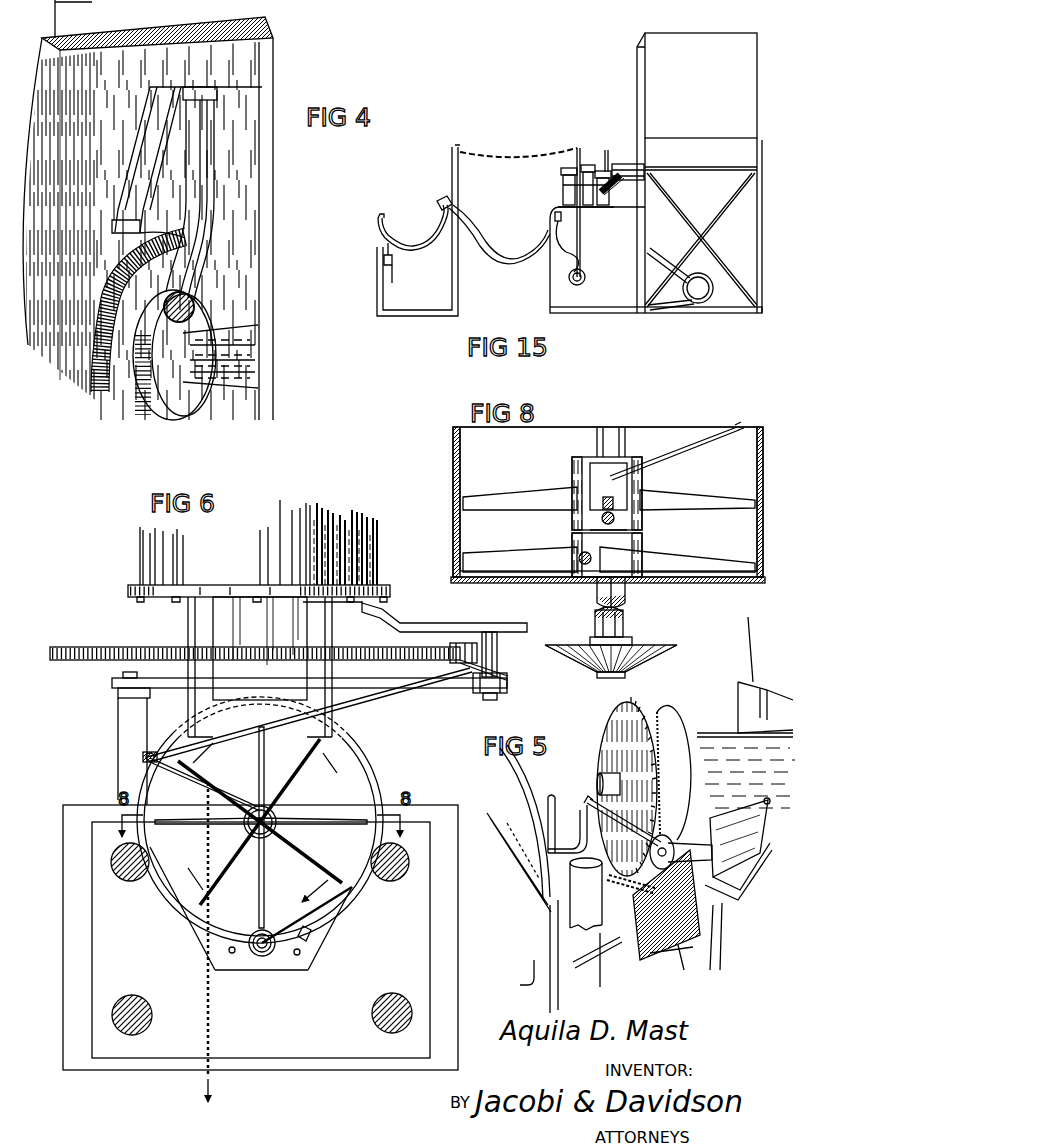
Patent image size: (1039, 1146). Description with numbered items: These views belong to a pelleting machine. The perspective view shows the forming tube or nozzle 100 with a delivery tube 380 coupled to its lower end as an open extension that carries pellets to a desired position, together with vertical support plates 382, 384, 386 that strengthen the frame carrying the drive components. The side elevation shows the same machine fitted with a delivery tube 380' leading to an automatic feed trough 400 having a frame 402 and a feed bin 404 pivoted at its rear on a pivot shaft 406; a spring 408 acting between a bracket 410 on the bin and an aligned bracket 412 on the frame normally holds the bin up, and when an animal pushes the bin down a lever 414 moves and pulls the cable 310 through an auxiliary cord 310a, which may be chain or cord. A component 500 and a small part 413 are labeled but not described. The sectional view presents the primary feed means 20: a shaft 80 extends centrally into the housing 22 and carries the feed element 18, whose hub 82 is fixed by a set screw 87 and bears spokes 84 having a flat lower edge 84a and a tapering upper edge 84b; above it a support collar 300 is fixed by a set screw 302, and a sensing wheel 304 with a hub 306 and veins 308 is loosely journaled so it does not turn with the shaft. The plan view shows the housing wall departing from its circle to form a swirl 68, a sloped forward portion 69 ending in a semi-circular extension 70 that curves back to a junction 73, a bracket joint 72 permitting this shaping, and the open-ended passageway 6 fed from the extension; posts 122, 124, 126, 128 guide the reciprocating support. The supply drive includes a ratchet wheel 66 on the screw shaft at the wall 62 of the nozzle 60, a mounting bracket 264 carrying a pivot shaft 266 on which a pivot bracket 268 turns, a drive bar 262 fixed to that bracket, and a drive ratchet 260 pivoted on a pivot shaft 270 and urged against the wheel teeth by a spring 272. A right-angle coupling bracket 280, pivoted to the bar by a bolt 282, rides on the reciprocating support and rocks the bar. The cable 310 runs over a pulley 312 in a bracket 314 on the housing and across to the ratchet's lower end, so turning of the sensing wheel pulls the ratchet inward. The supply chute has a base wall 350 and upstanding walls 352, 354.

In FIG. 4, the forming tube or nozzle 100 is at (213, 95).
In FIG. 4, the delivery tube 380 is at (233, 200).
In FIG. 4, the vertical support plate 382 is at (133, 172).
In FIG. 4, the vertical support plate 384 is at (160, 133).
In FIG. 4, the vertical support plate 386 is at (185, 87).
In FIG. 15, the tank 500 is at (628, 80).
In FIG. 15, the auxiliary cord 310a is at (576, 148).
In FIG. 6, the auxiliary cord 310a is at (210, 1060).
In FIG. 15, the lever 414 is at (478, 152).
In FIG. 15, the pivot shaft 406 is at (445, 203).
In FIG. 15, the feed bin 404 is at (424, 234).
In FIG. 15, the bracket 410 is at (380, 220).
In FIG. 15, the spring 408 is at (393, 246).
In FIG. 15, the bracket 412 is at (377, 265).
In FIG. 15, the rod 413 is at (392, 278).
In FIG. 15, the automatic feed trough 400 is at (380, 316).
In FIG. 15, the frame 402 is at (430, 318).
In FIG. 15, the outlet or delivery tube 380' is at (499, 256).
In FIG. 8, the semi-circular extension 70 is at (618, 427).
In FIG. 6, the semi-circular extension 70 is at (248, 948).
In FIG. 8, the sensing wheel 304 is at (585, 455).
In FIG. 8, the veins 308 is at (514, 497).
In FIG. 8, the support collar 300 is at (578, 510).
In FIG. 8, the hub 306 is at (640, 470).
In FIG. 8, the set screw 302 is at (614, 518).
In FIG. 8, the housing 22 is at (450, 497).
In FIG. 6, the housing 22 is at (366, 776).
In FIG. 8, the hub 82 is at (642, 551).
In FIG. 8, the upper edge 84b is at (728, 548).
In FIG. 8, the primary feed element 18 is at (525, 575).
In FIG. 6, the primary feed element 18 is at (185, 883).
In FIG. 8, the set screw 87 is at (575, 577).
In FIG. 8, the spokes 84 is at (676, 577).
In FIG. 6, the spokes 84 is at (352, 873).
In FIG. 8, the lower edge 84a is at (723, 578).
In FIG. 8, the shaft 80 is at (624, 623).
In FIG. 6, the shaft 80 is at (268, 816).
In FIG. 6, the outlet tube or nozzle 60 is at (132, 530).
In FIG. 6, the wall 62 is at (270, 586).
In FIG. 6, the mounting bracket 264 is at (421, 623).
In FIG. 6, the pivot shaft 266 is at (490, 632).
In FIG. 5, the pivot shaft 266 is at (765, 803).
In FIG. 6, the drive ratchet 260 is at (451, 645).
In FIG. 5, the drive ratchet 260 is at (660, 822).
In FIG. 6, the drive bar 262 is at (193, 688).
In FIG. 6, the pivot bracket 268 is at (508, 680).
In FIG. 6, the pivot shaft 270 is at (477, 695).
In FIG. 6, the coupling bracket 280 is at (122, 760).
In FIG. 5, the coupling bracket 280 is at (552, 797).
In FIG. 6, the pulley 312 is at (152, 752).
In FIG. 6, the bracket 314 is at (146, 760).
In FIG. 6, the flexible cable 310 is at (210, 782).
In FIG. 5, the flexible cable 310 is at (653, 865).
In FIG. 6, the primary feed means 20 is at (380, 796).
In FIG. 6, the upstanding post 124 is at (400, 853).
In FIG. 6, the upstanding post 128 is at (112, 862).
In FIG. 6, the upstanding post 126 is at (150, 1032).
In FIG. 6, the upstanding post 122 is at (394, 995).
In FIG. 6, the bracket joint 72 is at (297, 927).
In FIG. 6, the sloped forward portion 69 is at (330, 913).
In FIG. 6, the junction 73 is at (243, 933).
In FIG. 6, the open-ended passageway 6 is at (267, 957).
In FIG. 6, the swirl 68 is at (255, 968).
In FIG. 5, the ratchet wheel 66 is at (598, 753).
In FIG. 5, the bolt 282 is at (570, 820).
In FIG. 5, the base wall 350 is at (740, 837).
In FIG. 5, the upstanding wall 352 is at (757, 858).
In FIG. 5, the upstanding wall 354 is at (571, 935).
In FIG. 5, the spring 272 is at (695, 900).